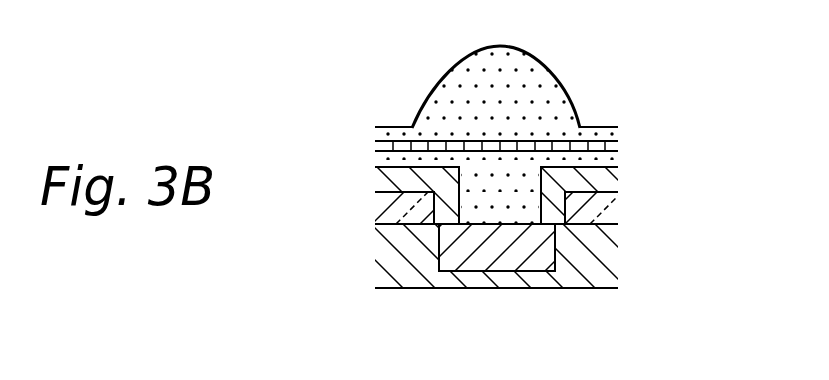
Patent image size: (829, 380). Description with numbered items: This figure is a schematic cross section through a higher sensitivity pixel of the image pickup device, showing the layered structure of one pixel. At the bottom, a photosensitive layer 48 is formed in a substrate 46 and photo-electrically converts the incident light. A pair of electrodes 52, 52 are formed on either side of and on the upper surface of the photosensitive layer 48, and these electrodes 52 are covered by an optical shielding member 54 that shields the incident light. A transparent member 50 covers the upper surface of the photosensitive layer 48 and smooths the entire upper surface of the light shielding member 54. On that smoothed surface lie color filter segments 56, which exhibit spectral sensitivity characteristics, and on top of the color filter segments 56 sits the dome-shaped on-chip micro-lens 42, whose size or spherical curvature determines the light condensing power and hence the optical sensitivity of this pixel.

The micro-lens 42 is at (535, 60).
The substrate 46 is at (588, 275).
The photosensitive layer 48 is at (540, 248).
The transparent member 50 is at (613, 162).
The electrode 52 is at (385, 205).
The optical shielding member 54 is at (613, 173).
The color filter segment 56 is at (385, 141).